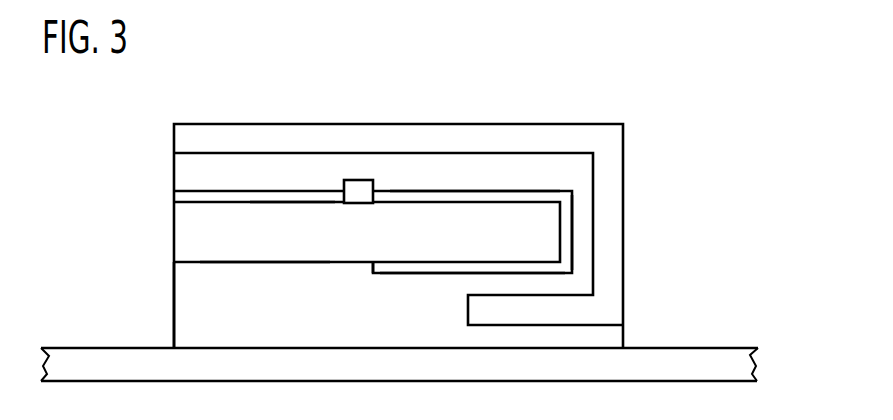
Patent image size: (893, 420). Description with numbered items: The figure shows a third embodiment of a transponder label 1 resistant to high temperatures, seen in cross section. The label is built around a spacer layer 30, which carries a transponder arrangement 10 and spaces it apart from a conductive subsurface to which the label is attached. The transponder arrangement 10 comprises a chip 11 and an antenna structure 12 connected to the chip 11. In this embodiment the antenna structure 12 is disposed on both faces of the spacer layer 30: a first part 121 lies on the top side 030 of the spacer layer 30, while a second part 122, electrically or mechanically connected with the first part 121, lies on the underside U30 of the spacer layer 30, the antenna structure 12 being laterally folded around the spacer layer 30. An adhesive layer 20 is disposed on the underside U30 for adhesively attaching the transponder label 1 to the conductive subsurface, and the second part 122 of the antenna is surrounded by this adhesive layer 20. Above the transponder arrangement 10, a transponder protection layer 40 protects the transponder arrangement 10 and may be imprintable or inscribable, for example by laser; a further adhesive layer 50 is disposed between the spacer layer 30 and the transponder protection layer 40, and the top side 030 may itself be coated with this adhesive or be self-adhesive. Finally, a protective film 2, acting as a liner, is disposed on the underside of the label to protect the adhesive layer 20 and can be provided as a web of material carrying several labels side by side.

The transponder label 1 is at (655, 95).
The protective film 2 is at (726, 358).
The transponder arrangement 10 is at (183, 199).
The chip 11 is at (360, 180).
The antenna structure 12 is at (520, 198).
The first part 121 is at (425, 192).
The second part 122 is at (441, 275).
The adhesive layer 20 is at (183, 305).
The spacer layer 30 is at (183, 238).
The top side 030 is at (292, 202).
The underside U30 is at (258, 264).
The transponder protection layer 40 is at (241, 135).
The adhesive layer 50 is at (183, 163).